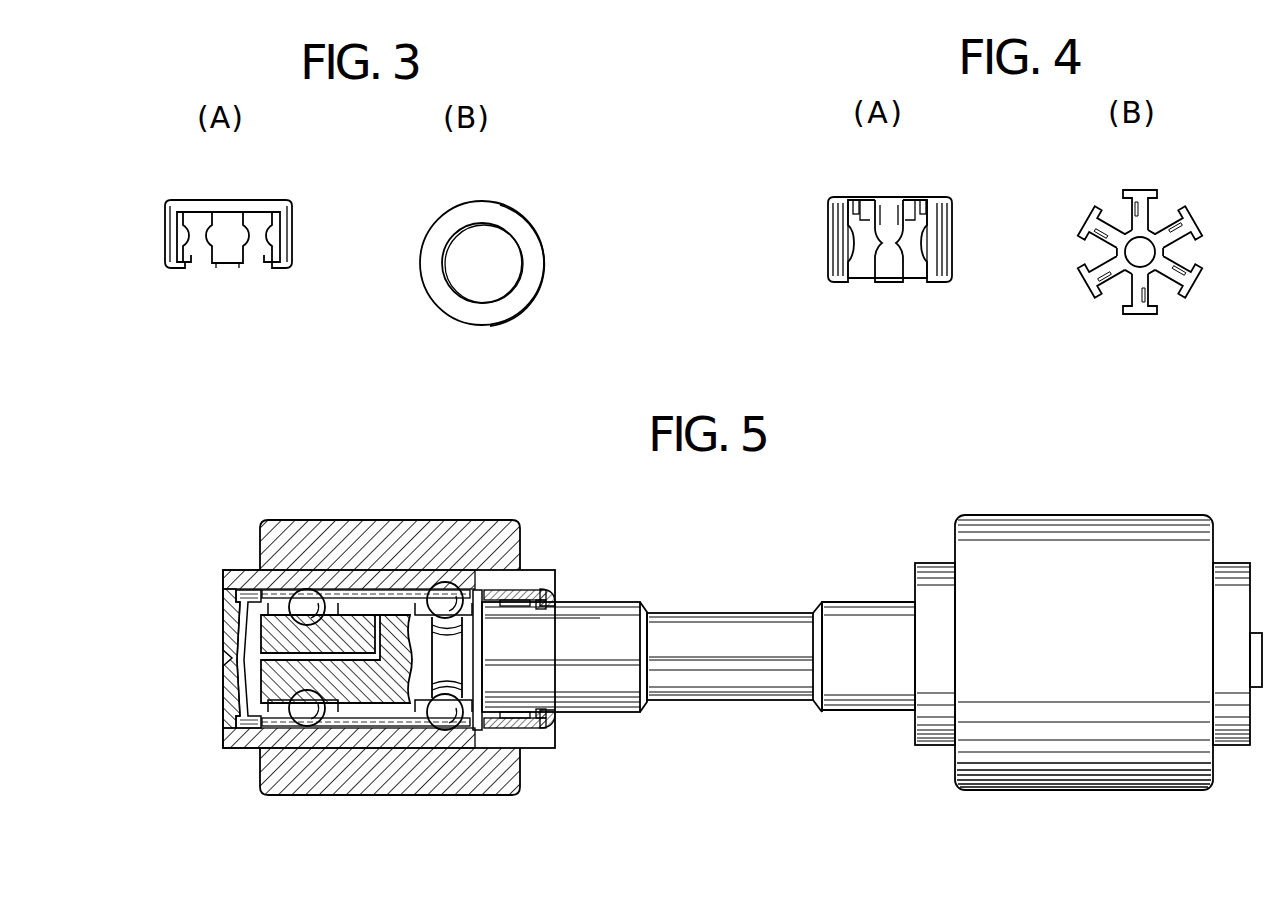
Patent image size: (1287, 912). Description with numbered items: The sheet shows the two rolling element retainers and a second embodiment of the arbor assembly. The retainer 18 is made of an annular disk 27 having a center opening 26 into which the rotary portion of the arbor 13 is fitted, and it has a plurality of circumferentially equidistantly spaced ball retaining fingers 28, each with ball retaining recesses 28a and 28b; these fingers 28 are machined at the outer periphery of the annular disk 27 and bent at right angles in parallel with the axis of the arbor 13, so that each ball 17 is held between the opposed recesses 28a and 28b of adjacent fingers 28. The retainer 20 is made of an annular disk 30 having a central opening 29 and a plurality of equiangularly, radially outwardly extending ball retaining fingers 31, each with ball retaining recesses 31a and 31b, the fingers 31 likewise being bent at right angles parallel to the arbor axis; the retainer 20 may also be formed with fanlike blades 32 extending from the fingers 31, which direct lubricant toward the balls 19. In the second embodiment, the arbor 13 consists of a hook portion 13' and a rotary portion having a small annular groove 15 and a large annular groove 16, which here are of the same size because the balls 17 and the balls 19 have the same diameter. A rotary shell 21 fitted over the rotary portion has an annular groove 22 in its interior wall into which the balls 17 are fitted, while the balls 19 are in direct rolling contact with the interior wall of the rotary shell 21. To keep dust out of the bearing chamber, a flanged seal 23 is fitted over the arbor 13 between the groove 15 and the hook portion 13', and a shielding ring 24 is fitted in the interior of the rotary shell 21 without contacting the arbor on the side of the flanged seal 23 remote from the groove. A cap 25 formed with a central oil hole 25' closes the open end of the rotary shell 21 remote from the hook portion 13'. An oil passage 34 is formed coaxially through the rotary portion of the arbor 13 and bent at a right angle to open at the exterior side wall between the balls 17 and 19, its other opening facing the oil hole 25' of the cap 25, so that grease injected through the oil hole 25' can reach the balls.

In FIG. 5, the arbor 13 is at (872, 652).
In FIG. 5, the hook portion 13' is at (730, 620).
In FIG. 5, the small annular groove 15 is at (447, 648).
In FIG. 5, the large annular groove 16 is at (315, 603).
In FIG. 5, the small-diameter balls 17 is at (443, 722).
In FIG. 3, the retainer 18 is at (163, 236).
In FIG. 5, the large-diameter balls 19 is at (304, 718).
In FIG. 4, the retainer 20 is at (824, 243).
In FIG. 5, the rotary shell 21 is at (537, 572).
In FIG. 5, the annular groove 22 is at (443, 582).
In FIG. 5, the flanged seal 23 is at (490, 537).
In FIG. 5, the shielding ring 24 is at (556, 725).
In FIG. 5, the cap 25 is at (359, 659).
In FIG. 5, the oil hole 25' is at (212, 659).
In FIG. 3, the center opening 26 is at (460, 254).
In FIG. 3, the annular disk 27 is at (232, 213).
In FIG. 3, the ball retaining fingers 28 is at (226, 260).
In FIG. 3, the ball retaining recess 28a is at (245, 235).
In FIG. 3, the ball retaining recess 28b is at (209, 235).
In FIG. 4, the central opening 29 is at (1133, 254).
In FIG. 4, the annular disk 30 is at (1168, 253).
In FIG. 4, the ball retaining fingers 31 is at (887, 270).
In FIG. 4, the ball retaining recess 31a is at (903, 247).
In FIG. 4, the ball retaining recess 31b is at (877, 247).
In FIG. 4, the fanlike blades 32 is at (922, 212).
In FIG. 5, the oil passage 34 is at (343, 655).